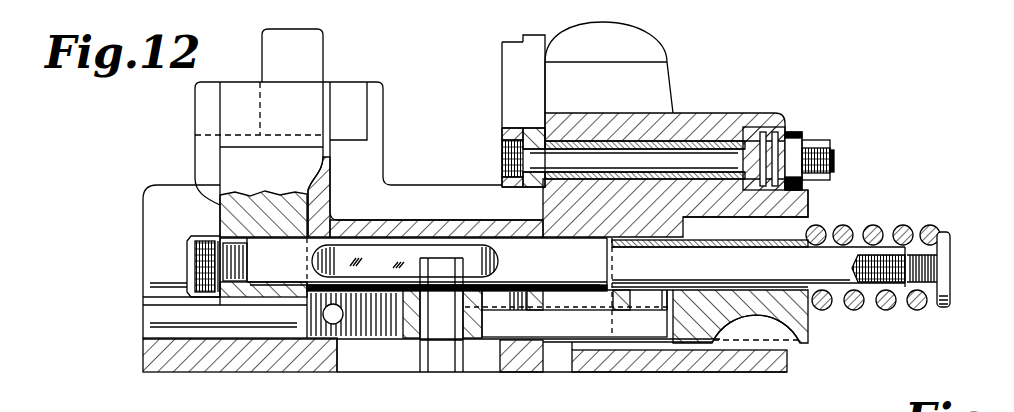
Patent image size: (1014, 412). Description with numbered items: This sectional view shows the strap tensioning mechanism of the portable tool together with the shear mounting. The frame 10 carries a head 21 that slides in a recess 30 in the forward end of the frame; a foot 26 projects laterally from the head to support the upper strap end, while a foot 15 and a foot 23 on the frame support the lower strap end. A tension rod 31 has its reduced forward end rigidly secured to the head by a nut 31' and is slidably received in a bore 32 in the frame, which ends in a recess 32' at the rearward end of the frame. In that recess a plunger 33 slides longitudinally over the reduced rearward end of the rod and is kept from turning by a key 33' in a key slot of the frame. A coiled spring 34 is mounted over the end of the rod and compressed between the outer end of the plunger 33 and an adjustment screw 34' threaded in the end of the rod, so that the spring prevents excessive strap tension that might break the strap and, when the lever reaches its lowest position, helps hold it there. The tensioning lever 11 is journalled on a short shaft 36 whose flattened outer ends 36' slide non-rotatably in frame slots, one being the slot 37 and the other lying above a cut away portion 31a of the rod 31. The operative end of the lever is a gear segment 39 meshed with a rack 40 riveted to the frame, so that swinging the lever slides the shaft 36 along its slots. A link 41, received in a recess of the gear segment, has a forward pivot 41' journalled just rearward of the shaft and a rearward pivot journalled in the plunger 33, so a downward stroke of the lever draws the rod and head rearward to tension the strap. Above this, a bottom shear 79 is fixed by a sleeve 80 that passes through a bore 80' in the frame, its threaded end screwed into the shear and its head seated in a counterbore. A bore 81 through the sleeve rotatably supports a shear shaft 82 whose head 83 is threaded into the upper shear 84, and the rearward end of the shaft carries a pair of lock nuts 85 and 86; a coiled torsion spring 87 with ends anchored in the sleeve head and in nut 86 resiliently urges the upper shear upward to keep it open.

The frame 10 is at (250, 367).
The tensioning lever 11 is at (410, 353).
The foot 15 is at (609, 67).
The head 21 is at (262, 193).
The foot 23 is at (353, 89).
The foot 26 is at (259, 82).
The recess 30 is at (150, 295).
The tension rod 31 is at (415, 264).
The nut 31' is at (191, 247).
The cut away portion 31a is at (360, 250).
The bore 32 is at (514, 208).
The recess 32' is at (776, 206).
The plunger 33 is at (763, 318).
The key 33' is at (756, 360).
The coiled spring 34 is at (873, 251).
The adjustment screw 34' is at (964, 264).
The short shaft 36 is at (442, 308).
The flattened outer ends 36' is at (438, 305).
The slot 37 is at (372, 363).
The gear segment 39 is at (397, 289).
The rack 40 is at (353, 340).
The link 41 is at (569, 313).
The pivot 41' is at (520, 282).
The bottom shear 79 is at (523, 37).
The sleeve 80 is at (665, 119).
The bore 80' is at (646, 135).
The bore 81 is at (602, 148).
The shear shaft 82 is at (560, 147).
The head 83 is at (503, 148).
The upper shear 84 is at (503, 97).
The nut 85 is at (827, 143).
The nut 86 is at (802, 132).
The coiled torsion spring 87 is at (788, 131).